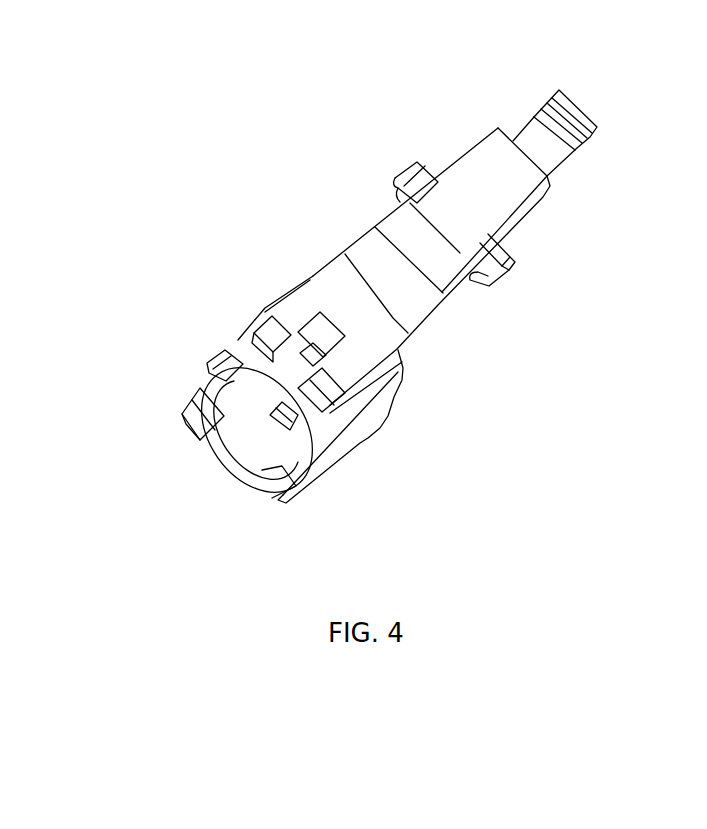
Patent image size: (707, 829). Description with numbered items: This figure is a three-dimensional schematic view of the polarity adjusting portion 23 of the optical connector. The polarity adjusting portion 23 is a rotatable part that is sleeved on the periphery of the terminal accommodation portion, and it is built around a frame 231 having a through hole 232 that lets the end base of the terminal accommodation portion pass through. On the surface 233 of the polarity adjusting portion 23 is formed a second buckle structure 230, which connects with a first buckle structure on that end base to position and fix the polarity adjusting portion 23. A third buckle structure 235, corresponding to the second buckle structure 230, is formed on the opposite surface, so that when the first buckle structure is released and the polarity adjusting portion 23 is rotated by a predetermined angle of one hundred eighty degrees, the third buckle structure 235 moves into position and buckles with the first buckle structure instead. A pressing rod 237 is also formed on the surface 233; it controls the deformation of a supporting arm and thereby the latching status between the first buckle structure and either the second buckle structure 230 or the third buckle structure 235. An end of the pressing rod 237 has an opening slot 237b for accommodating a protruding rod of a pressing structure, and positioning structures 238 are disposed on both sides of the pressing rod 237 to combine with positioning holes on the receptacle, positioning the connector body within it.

The polarity adjusting portion 23 is at (253, 277).
The second buckle structure 230 is at (313, 347).
The frame 231 is at (360, 438).
The through hole 232 is at (253, 437).
The surface 233 is at (287, 373).
The third buckle structure 235 is at (283, 418).
The pressing rod 237 is at (518, 174).
The opening slot 237b is at (530, 121).
The positioning structure 238 is at (517, 235).